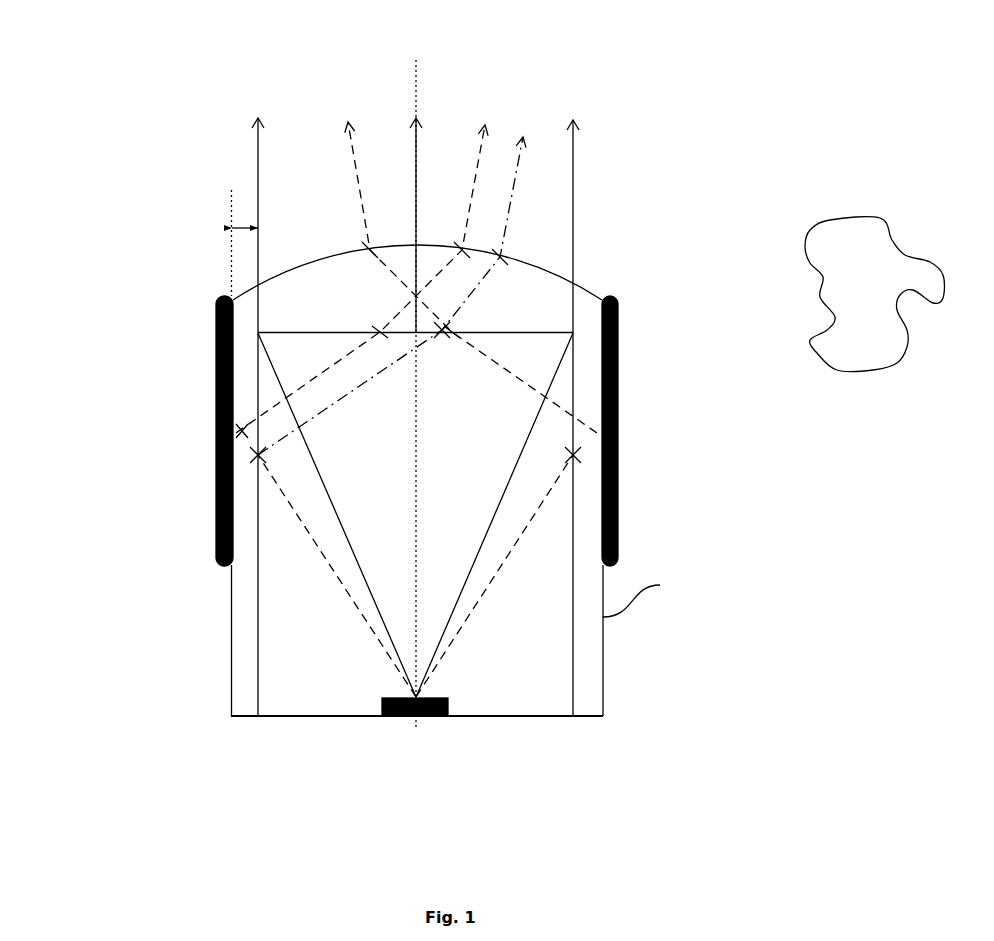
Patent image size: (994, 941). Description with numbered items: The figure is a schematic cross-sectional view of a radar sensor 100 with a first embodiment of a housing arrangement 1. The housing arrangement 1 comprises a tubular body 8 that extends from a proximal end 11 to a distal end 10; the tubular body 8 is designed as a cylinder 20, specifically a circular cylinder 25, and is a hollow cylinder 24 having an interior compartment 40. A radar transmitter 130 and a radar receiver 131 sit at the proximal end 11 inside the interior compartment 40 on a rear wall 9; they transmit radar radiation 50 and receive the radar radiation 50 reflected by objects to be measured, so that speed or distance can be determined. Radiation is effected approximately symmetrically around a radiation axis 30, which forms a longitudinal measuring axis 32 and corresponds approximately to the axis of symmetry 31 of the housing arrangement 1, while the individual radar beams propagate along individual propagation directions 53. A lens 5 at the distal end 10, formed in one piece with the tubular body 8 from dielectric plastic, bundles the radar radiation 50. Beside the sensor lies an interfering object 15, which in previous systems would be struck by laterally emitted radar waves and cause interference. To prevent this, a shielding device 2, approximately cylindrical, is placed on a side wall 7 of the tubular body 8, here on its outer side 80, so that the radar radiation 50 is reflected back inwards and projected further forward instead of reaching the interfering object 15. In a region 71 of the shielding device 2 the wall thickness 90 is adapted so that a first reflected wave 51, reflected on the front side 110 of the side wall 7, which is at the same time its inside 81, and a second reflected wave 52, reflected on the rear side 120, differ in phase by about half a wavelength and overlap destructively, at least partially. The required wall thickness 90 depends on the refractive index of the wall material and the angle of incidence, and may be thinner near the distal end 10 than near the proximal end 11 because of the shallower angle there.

The housing arrangement 1 is at (366, 417).
The shielding device 2 is at (412, 390).
The lens 5 is at (330, 258).
The side wall 7 is at (352, 635).
The tubular body 8 is at (352, 635).
The rear wall 9 is at (319, 722).
The distal end 10 is at (412, 390).
The proximal end 11 is at (466, 752).
The interfering object 15 is at (870, 289).
The cylinder 20 is at (352, 635).
The hollow cylinder 24 is at (352, 635).
The circular cylinder 25 is at (352, 635).
The radiation axis 30 is at (483, 388).
The axis of symmetry 31 is at (483, 388).
The longitudinal measuring axis 32 is at (416, 98).
The interior compartment 40 is at (548, 702).
The radar radiation 50 is at (547, 93).
The first reflected wave 51 is at (337, 402).
The second reflected wave 52 is at (347, 355).
The propagation directions 53 is at (337, 520).
The region 71 is at (603, 287).
The outer side 80 is at (643, 598).
The inside 81 is at (415, 524).
The wall thickness 90 is at (231, 190).
The radar sensor 100 is at (487, 407).
The front side 110 is at (258, 658).
The rear side 120 is at (230, 637).
The radar transmitter 130 is at (469, 733).
The radar receiver 131 is at (440, 718).